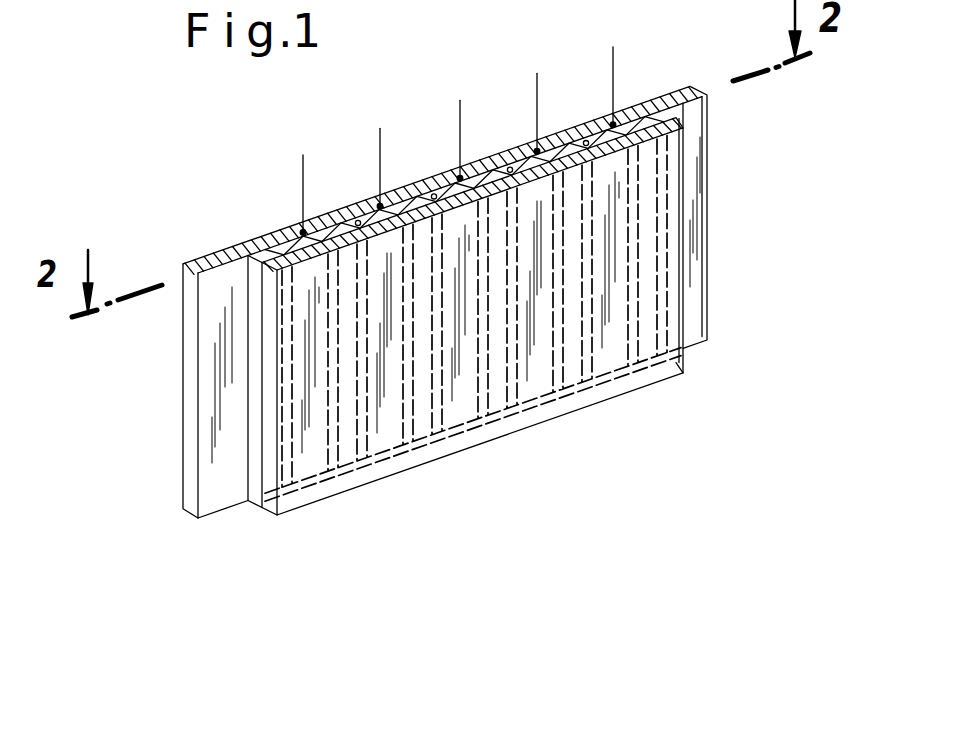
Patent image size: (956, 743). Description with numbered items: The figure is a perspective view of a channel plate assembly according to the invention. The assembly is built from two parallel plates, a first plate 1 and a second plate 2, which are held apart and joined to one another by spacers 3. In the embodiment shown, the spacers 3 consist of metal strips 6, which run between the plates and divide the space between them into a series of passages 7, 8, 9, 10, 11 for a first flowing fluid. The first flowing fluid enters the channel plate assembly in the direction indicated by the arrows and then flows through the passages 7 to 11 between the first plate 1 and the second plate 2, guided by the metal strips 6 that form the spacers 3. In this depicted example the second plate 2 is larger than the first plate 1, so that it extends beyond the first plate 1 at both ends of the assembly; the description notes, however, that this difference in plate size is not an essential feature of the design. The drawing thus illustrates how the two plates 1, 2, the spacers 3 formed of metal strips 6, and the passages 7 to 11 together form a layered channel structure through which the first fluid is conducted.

The first plate 1 is at (352, 489).
The second plate 2 is at (212, 486).
The spacers 3 is at (266, 241).
The metal strips 6 is at (352, 222).
The passage 7 is at (291, 236).
The passage 8 is at (383, 206).
The passage 9 is at (448, 180).
The passage 10 is at (520, 150).
The passage 11 is at (598, 126).